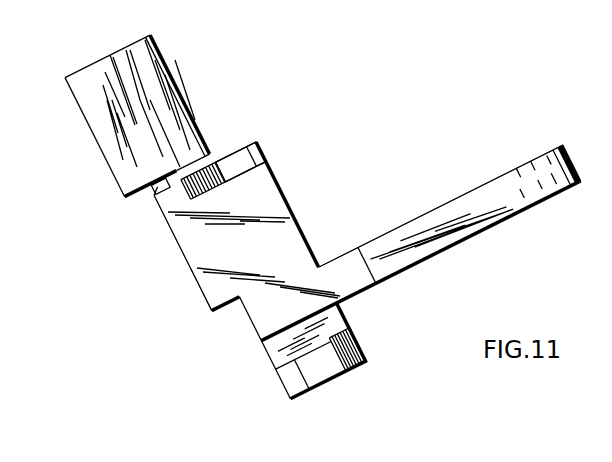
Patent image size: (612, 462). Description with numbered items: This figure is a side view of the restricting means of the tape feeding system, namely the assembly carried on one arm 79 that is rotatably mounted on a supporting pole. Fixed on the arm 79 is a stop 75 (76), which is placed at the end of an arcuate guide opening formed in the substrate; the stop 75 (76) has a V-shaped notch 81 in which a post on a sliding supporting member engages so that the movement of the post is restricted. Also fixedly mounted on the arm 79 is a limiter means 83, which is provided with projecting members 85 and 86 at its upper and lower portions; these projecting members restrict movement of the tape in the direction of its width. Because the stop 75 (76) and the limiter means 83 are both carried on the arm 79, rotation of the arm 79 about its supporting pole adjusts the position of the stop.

The stop 75 is at (289, 142).
The stop 76 is at (247, 160).
The arm 79 is at (453, 213).
The V-shaped notch 81 is at (227, 165).
The limiter means 83 is at (98, 125).
The projecting member 85 is at (112, 57).
The projecting member 86 is at (157, 193).